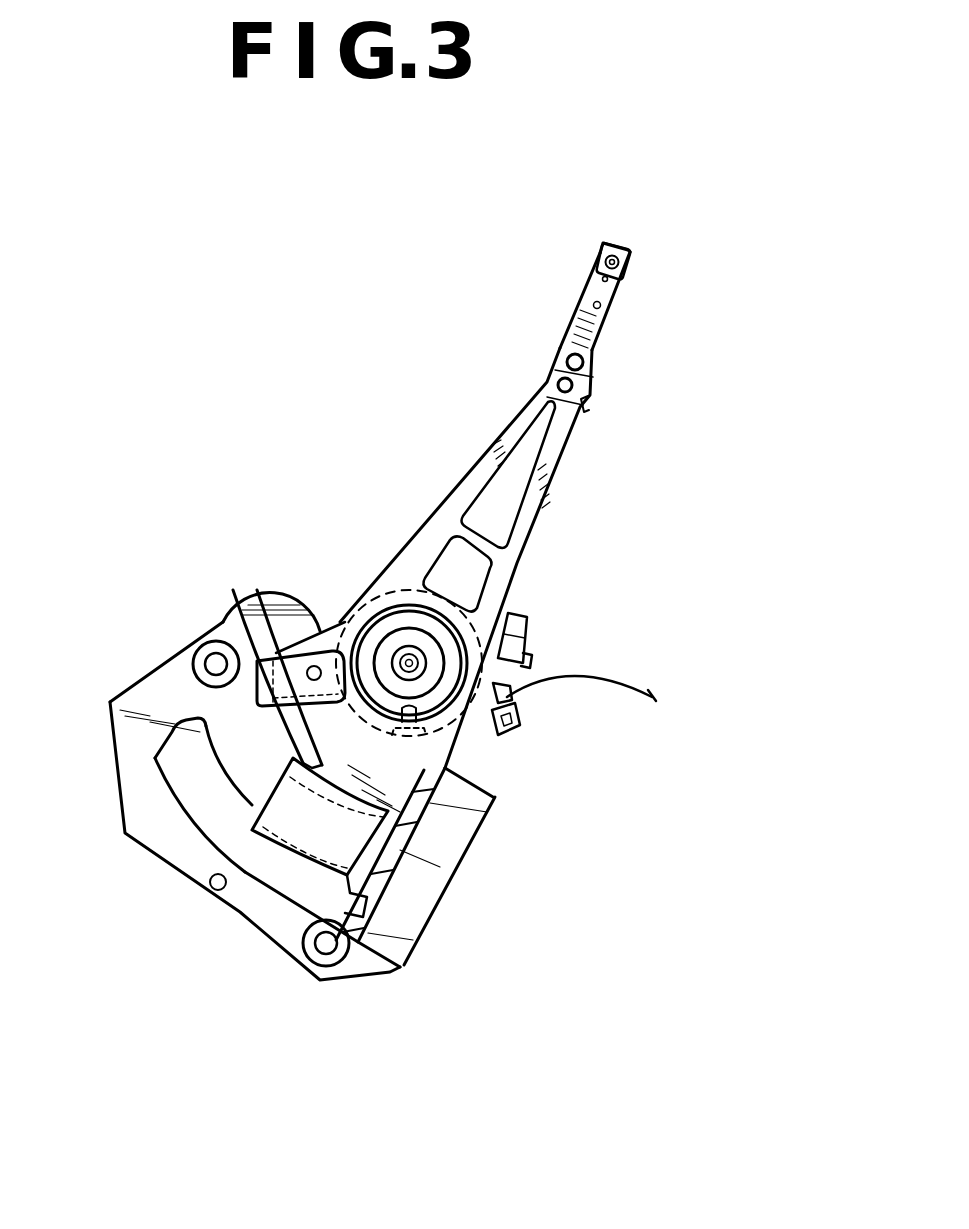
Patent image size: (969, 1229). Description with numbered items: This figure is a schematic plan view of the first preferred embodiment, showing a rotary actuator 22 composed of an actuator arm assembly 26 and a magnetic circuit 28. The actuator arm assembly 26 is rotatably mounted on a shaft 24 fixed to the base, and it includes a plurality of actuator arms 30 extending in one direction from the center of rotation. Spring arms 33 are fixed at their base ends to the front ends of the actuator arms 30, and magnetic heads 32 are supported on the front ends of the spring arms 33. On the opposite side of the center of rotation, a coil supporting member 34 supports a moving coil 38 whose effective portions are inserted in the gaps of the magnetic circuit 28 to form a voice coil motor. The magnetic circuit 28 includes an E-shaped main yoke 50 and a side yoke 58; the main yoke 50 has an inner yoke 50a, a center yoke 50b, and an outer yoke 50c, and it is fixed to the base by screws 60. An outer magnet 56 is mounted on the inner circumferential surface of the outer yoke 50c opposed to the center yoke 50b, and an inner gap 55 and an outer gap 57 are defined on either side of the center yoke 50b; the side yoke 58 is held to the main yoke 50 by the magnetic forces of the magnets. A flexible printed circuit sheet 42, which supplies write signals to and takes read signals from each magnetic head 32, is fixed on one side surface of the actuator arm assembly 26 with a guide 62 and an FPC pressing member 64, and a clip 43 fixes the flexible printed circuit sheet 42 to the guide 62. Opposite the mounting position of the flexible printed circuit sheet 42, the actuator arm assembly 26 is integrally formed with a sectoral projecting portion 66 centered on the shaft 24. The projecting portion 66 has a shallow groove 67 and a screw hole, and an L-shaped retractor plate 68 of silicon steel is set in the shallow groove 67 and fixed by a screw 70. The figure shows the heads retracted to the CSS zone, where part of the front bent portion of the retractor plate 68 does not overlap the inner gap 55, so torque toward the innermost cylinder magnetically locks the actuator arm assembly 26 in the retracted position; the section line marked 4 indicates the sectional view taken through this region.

The rotary actuator 22 is at (298, 592).
The shaft 24 is at (408, 660).
The actuator arm assembly 26 is at (378, 565).
The magnetic circuit 28 is at (115, 692).
The actuator arms 30 is at (517, 420).
The magnetic heads 32 is at (610, 243).
The spring arms 33 is at (578, 311).
The coil supporting member 34 is at (317, 883).
The moving coil 38 is at (293, 838).
The flexible printed circuit sheet 42 is at (633, 680).
The clip 43 is at (510, 737).
The main yoke 50 is at (143, 673).
The inner yoke 50a is at (447, 787).
The center yoke 50b is at (400, 853).
The outer yoke 50c is at (188, 883).
The inner gap 55 is at (245, 628).
The outer magnet 56 is at (180, 792).
The outer gap 57 is at (227, 803).
The side yoke 58 is at (430, 920).
The screws 60 is at (200, 652).
The guide 62 is at (513, 703).
The FPC pressing member 64 is at (522, 612).
The projecting portion 66 is at (257, 590).
The shallow groove 67 is at (313, 718).
The retractor plate 68 is at (233, 590).
The screw 70 is at (316, 666).
The section line 4- 4 is at (222, 717).